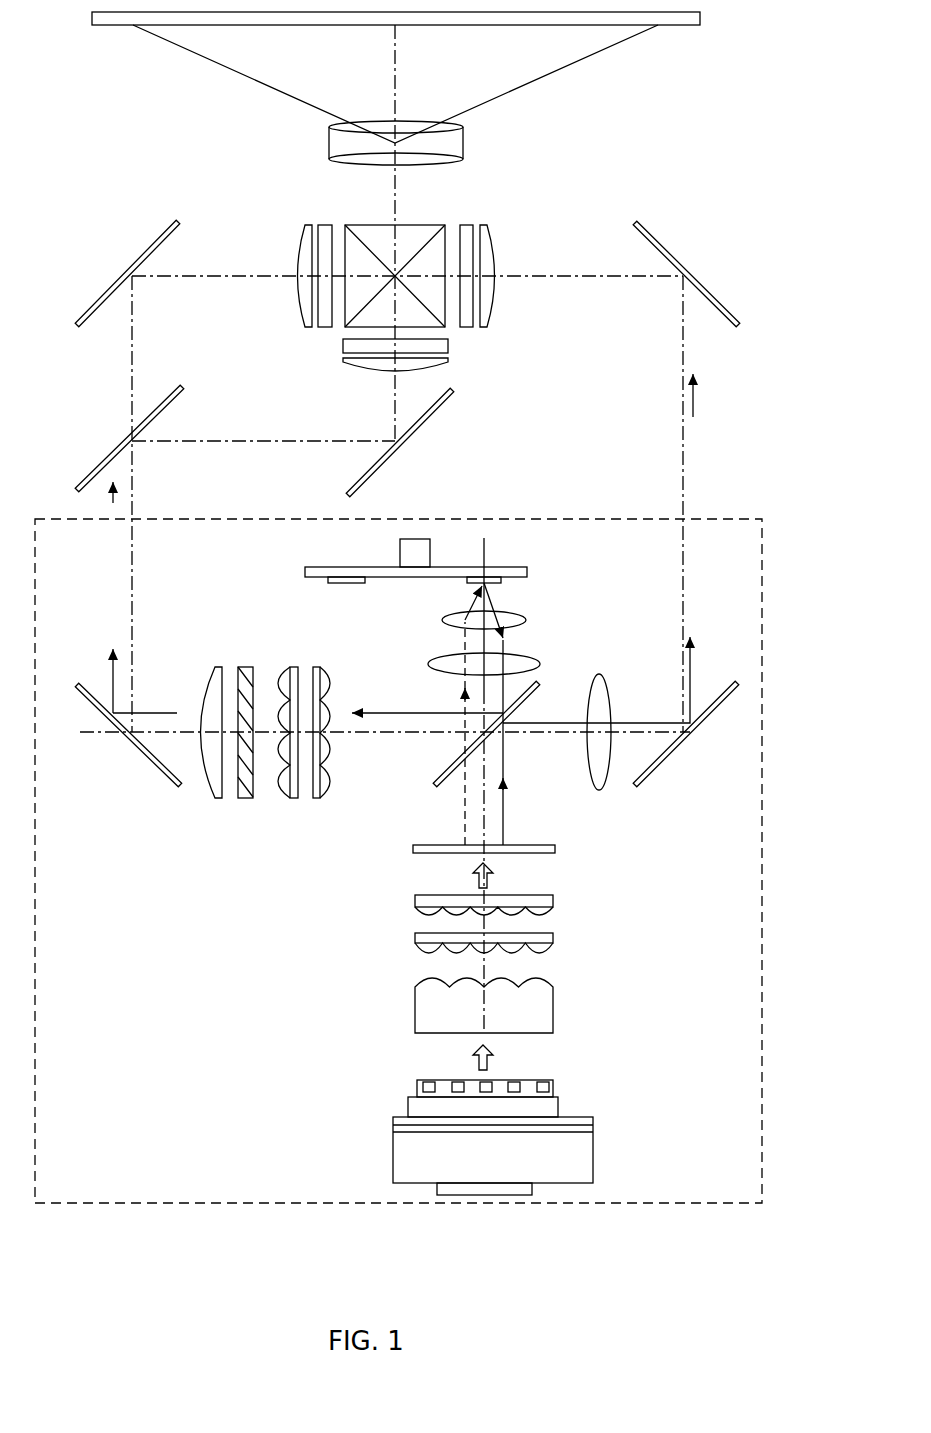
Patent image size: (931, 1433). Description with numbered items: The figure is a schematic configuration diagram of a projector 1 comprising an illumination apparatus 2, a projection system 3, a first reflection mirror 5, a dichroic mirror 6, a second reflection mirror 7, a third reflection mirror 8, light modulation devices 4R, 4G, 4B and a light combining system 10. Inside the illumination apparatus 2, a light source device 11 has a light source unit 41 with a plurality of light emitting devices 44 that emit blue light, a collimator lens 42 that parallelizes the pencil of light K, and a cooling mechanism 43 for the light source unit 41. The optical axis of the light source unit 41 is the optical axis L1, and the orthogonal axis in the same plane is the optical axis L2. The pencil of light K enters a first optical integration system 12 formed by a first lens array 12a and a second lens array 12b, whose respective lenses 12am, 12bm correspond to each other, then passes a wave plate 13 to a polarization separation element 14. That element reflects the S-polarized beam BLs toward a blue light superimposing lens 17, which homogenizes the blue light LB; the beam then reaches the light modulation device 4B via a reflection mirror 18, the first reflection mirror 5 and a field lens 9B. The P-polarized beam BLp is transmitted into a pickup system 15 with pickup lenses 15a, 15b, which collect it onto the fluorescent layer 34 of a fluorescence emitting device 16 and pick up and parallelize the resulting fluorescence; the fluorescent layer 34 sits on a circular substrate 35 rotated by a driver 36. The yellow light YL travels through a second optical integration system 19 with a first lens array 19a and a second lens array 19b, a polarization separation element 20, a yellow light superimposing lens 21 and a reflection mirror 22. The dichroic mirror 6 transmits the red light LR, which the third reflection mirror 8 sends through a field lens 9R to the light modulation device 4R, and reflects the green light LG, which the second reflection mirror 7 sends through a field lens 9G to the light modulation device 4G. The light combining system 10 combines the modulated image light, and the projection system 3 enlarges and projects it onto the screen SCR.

The projector 1 is at (752, 112).
The illumination apparatus 2 is at (762, 512).
The screen SCR is at (673, 27).
The projection system 3 is at (480, 143).
The field lens 9R is at (303, 226).
The light modulation device 4R is at (325, 225).
The light combining system 10 is at (355, 226).
The light modulation device 4B is at (466, 225).
The field lens 9B is at (490, 226).
The third reflection mirror 8 is at (120, 275).
The first reflection mirror 5 is at (680, 262).
The light modulation device 4G is at (340, 345).
The field lens 9G is at (345, 368).
The red light LR is at (130, 372).
The green light LG is at (395, 418).
The blue light LB is at (693, 410).
The dichroic mirror 6 is at (112, 452).
The second reflection mirror 7 is at (420, 430).
The yellow light YL is at (110, 503).
The driver 36 is at (420, 540).
The substrate 35 is at (368, 572).
The fluorescence emitting device 16 is at (310, 557).
The fluorescent layer 34 is at (502, 580).
The optical axis L1 is at (486, 552).
The pickup system 15 is at (430, 633).
The pickup lens 15a is at (450, 617).
The pickup lens 15b is at (447, 660).
The beam of P-polarized component BLp is at (463, 705).
The beam of S-polarized component BLs is at (640, 723).
The polarization separation element 14 is at (433, 775).
The blue light superimposing lens 17 is at (590, 760).
The reflection mirror 18 is at (668, 762).
The reflection mirror 22 is at (173, 778).
The optical axis L2 is at (100, 736).
The yellow light superimposing lens 21 is at (210, 795).
The polarization separation element 20 is at (245, 800).
The second optical integration system 19 is at (319, 788).
The second lens array 19b is at (285, 800).
The first lens array 19a is at (333, 800).
The wave plate 13 is at (555, 849).
The pencil of light K is at (470, 880).
The first optical integration system 12 is at (501, 939).
The second lens array 12b is at (557, 900).
The first lens array 12a is at (557, 938).
The second microlens 12bm is at (420, 917).
The first microlens 12am is at (420, 955).
The light source device 11 is at (553, 1086).
The collimator lens 42 is at (553, 1003).
The light emitting devices 44 is at (515, 1080).
The light source unit 41 is at (565, 1105).
The cooling mechanism 43 is at (531, 1144).